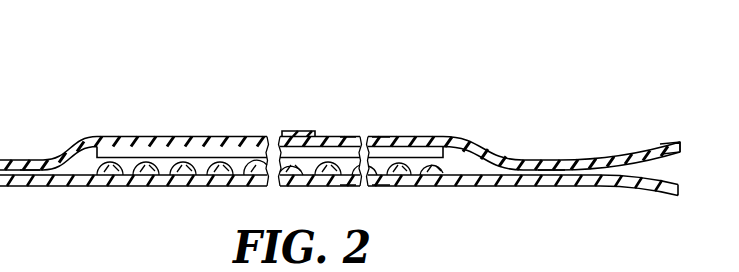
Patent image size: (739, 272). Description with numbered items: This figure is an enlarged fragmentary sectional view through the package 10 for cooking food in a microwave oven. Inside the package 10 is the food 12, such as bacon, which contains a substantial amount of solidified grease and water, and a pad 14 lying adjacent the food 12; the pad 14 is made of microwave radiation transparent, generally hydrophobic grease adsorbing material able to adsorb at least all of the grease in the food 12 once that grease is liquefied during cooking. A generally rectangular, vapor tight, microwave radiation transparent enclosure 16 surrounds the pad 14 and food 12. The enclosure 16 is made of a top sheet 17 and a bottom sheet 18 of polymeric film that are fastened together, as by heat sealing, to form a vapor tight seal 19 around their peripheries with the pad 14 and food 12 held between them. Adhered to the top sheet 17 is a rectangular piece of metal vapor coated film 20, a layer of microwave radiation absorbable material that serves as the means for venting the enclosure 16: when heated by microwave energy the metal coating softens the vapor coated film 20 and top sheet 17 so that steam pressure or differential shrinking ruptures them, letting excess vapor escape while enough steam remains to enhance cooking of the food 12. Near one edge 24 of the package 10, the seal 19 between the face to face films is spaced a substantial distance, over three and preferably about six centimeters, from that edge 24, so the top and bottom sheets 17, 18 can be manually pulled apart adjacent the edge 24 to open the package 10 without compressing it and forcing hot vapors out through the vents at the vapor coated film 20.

The package 10 is at (166, 95).
The food 12 is at (113, 153).
The pad 14 is at (142, 174).
The enclosure 16 is at (70, 197).
The top sheet 17 is at (383, 142).
The bottom sheet 18 is at (373, 187).
The vapor tight seal 19 is at (28, 173).
The metal vapor coated film 20 is at (292, 131).
The edge 24 is at (680, 142).